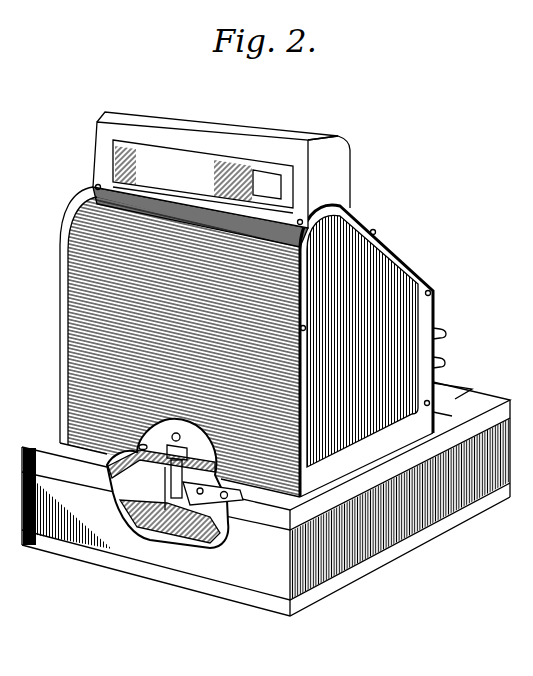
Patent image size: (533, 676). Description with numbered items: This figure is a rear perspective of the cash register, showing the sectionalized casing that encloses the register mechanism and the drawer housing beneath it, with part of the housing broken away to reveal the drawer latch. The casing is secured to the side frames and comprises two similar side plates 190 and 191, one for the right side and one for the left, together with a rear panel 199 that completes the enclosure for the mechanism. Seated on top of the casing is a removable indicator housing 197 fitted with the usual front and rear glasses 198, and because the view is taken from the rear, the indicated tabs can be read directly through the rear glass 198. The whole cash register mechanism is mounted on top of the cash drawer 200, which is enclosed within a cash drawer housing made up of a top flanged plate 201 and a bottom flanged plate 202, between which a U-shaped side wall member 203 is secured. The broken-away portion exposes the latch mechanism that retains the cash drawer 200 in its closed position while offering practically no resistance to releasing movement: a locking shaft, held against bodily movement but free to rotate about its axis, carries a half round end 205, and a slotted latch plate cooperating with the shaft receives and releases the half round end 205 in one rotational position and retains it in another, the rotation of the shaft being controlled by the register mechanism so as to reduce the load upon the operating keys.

The side plate 190 is at (166, 342).
The side plate 191 is at (393, 267).
The indicator housing 197 is at (178, 128).
The rear glass 198 is at (224, 162).
The rear panel 199 is at (90, 316).
The cash drawer 200 is at (207, 517).
The top flanged plate 201 is at (50, 437).
The bottom flanged plate 202 is at (133, 571).
The U-shaped side wall member 203 is at (209, 570).
The half round end 205 is at (167, 488).